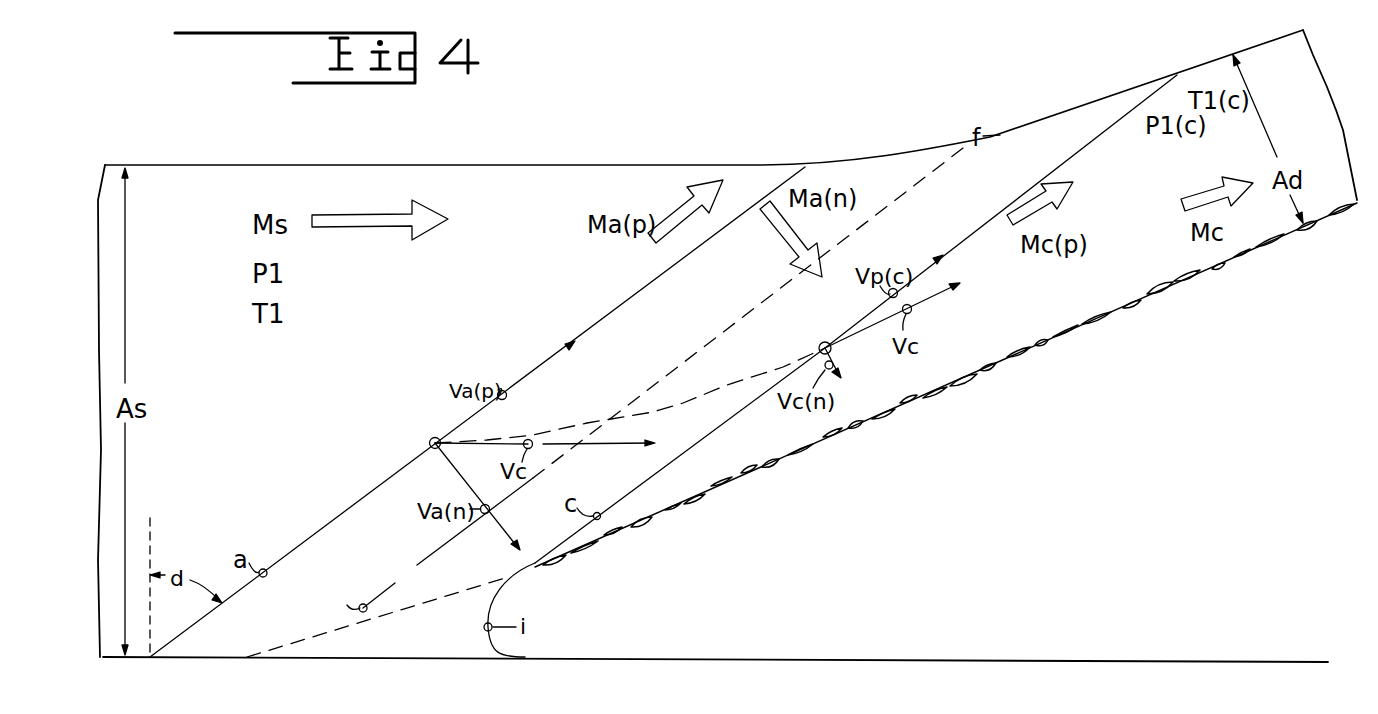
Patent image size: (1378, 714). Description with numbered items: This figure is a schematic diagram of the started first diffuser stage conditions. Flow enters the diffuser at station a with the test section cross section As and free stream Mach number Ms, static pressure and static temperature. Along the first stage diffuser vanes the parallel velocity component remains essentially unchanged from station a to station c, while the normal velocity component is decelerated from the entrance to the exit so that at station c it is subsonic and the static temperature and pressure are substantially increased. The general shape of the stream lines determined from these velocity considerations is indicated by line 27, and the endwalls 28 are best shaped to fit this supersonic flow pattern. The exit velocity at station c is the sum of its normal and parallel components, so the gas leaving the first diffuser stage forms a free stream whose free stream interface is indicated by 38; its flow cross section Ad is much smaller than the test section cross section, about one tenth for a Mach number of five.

The streamline 27 is at (707, 387).
The endwalls 28 is at (935, 150).
The free stream interface 38 is at (830, 440).